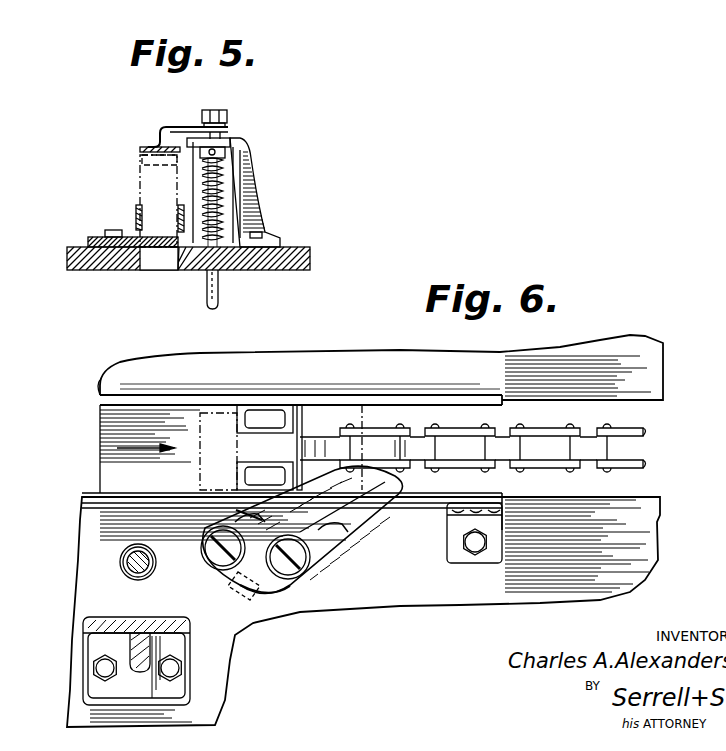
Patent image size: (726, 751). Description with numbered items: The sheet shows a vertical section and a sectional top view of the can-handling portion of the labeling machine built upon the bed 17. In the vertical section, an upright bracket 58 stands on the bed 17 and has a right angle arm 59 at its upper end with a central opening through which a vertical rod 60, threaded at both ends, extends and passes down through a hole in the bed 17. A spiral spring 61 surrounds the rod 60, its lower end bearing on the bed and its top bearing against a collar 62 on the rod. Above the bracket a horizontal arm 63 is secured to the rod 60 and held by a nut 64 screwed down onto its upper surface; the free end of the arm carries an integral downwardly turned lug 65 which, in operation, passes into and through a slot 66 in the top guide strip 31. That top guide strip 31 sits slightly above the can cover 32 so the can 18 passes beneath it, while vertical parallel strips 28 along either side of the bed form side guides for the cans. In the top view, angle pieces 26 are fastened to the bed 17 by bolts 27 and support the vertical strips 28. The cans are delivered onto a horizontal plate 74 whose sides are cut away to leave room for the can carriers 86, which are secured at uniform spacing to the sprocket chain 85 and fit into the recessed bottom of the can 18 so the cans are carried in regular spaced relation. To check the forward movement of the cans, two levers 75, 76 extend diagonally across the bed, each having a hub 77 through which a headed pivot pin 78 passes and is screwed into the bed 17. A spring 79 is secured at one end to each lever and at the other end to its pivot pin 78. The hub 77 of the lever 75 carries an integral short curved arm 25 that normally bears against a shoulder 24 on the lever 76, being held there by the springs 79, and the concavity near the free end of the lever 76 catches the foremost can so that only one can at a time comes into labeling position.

In FIG. 5, the bed 17 is at (300, 247).
In FIG. 6, the bed 17 is at (660, 521).
In FIG. 5, the can 18 is at (148, 184).
In FIG. 6, the can 18 is at (182, 420).
In FIG. 6, the shoulder 24 is at (282, 598).
In FIG. 6, the short curved arm 25 is at (248, 584).
In FIG. 6, the angle piece 26 is at (462, 560).
In FIG. 6, the bolt 27 is at (480, 550).
In FIG. 5, the vertical parallel strip 28 is at (136, 210).
In FIG. 6, the vertical parallel strip 28 is at (118, 400).
In FIG. 5, the top guide strip 31 is at (146, 149).
In FIG. 5, the can cover 32 is at (140, 158).
In FIG. 5, the upright bracket 58 is at (261, 202).
In FIG. 6, the upright bracket 58 is at (83, 625).
In FIG. 5, the right angle arm 59 is at (194, 140).
In FIG. 5, the vertical rod 60 is at (219, 288).
In FIG. 6, the vertical rod 60 is at (123, 573).
In FIG. 5, the spiral spring 61 is at (223, 176).
In FIG. 6, the spiral spring 61 is at (122, 554).
In FIG. 5, the collar 62 is at (228, 151).
In FIG. 5, the horizontal arm 63 is at (168, 127).
In FIG. 5, the nut 64 is at (222, 117).
In FIG. 5, the downwardly turned lug 65 is at (158, 141).
In FIG. 5, the slot 66 is at (152, 148).
In FIG. 6, the horizontal plate 74 is at (444, 441).
In FIG. 6, the lever 75 is at (240, 508).
In FIG. 6, the lever 76 is at (345, 534).
In FIG. 6, the hub 77 is at (203, 558).
In FIG. 6, the pivot pin 78 is at (208, 566).
In FIG. 6, the spring 79 is at (238, 524).
In FIG. 6, the sprocket chain 85 is at (645, 432).
In FIG. 6, the can carrier 86 is at (255, 412).